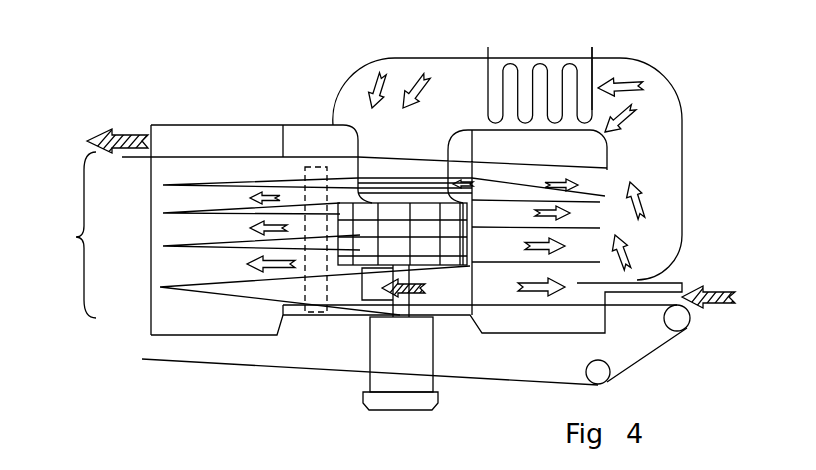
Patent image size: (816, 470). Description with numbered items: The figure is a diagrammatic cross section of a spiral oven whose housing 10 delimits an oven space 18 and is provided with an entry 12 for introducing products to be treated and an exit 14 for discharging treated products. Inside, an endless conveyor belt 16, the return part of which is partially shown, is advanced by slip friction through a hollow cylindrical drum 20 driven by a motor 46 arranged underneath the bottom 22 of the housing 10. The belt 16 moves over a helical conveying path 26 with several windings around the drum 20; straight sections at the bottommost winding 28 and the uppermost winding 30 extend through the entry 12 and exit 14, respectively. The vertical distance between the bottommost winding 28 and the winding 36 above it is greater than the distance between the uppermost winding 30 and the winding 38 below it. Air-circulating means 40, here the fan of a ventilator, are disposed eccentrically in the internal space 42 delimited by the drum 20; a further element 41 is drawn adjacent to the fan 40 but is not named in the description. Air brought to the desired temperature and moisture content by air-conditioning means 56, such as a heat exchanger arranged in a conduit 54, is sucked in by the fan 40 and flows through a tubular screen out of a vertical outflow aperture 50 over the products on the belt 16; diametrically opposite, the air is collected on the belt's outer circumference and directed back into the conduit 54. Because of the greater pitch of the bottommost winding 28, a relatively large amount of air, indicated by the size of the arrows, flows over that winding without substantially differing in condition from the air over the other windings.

The housing 10 is at (293, 125).
The entry 12 is at (690, 284).
The exit 14 is at (146, 150).
The endless conveyor belt 16 is at (590, 168).
The oven space 18 is at (212, 153).
The hollow cylindrical drum 20 is at (318, 318).
The bottom 22 is at (498, 334).
The helical conveying path 26 is at (191, 235).
The bottommost winding 28 is at (202, 290).
The uppermost winding 30 is at (247, 157).
The winding situated above the bottommost winding 36 is at (178, 248).
The winding situated below the uppermost winding 38 is at (178, 184).
The air-circulating means 40 is at (443, 237).
The blower wheel 41 is at (353, 248).
The internal space 42 is at (540, 158).
The motor 46 is at (436, 386).
The vertical outflow aperture 50 is at (348, 182).
The conduit 54 is at (484, 90).
The air-conditioning means 56 is at (595, 62).